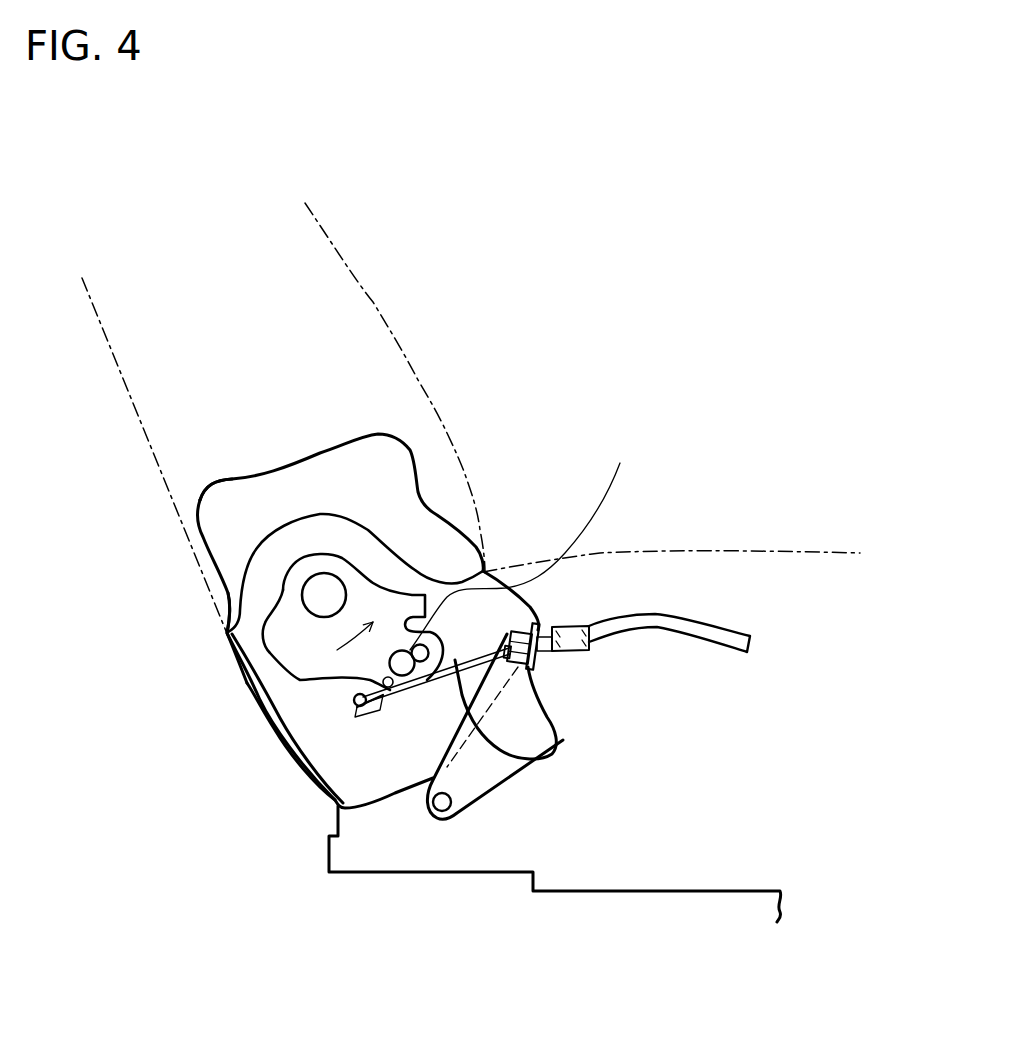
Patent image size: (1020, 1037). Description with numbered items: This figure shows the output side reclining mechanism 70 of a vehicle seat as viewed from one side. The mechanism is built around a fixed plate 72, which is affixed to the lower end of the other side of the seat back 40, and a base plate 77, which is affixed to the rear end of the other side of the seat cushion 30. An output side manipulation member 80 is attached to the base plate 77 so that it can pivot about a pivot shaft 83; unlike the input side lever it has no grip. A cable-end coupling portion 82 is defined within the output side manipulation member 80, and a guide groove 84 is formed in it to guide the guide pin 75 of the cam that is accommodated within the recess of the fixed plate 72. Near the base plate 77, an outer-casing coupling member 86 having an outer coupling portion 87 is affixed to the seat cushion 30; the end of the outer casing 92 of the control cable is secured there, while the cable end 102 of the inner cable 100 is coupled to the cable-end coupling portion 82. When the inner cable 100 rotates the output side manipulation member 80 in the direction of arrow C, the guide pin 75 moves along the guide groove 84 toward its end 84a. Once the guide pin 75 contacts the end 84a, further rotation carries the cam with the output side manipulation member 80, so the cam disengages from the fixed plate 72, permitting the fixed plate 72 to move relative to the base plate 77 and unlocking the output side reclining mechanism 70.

The seat cushion 30 is at (730, 550).
The seat back 40 is at (373, 302).
The output side reclining mechanism 70 is at (278, 432).
The fixed plate 72 is at (200, 500).
The guide pin 75 is at (521, 541).
The base plate 77 is at (227, 633).
The output side manipulation member 80 is at (287, 668).
The cable-end coupling portion 82 is at (290, 750).
The pivot shaft 83 is at (301, 588).
The guide groove 84 is at (395, 690).
The end of guide groove 84a is at (352, 701).
The outer-casing coupling member 86 is at (467, 813).
The outer coupling portion 87 is at (545, 622).
The outer casing 92 is at (716, 648).
The inner cable 100 is at (550, 758).
The cable end 102 is at (352, 714).